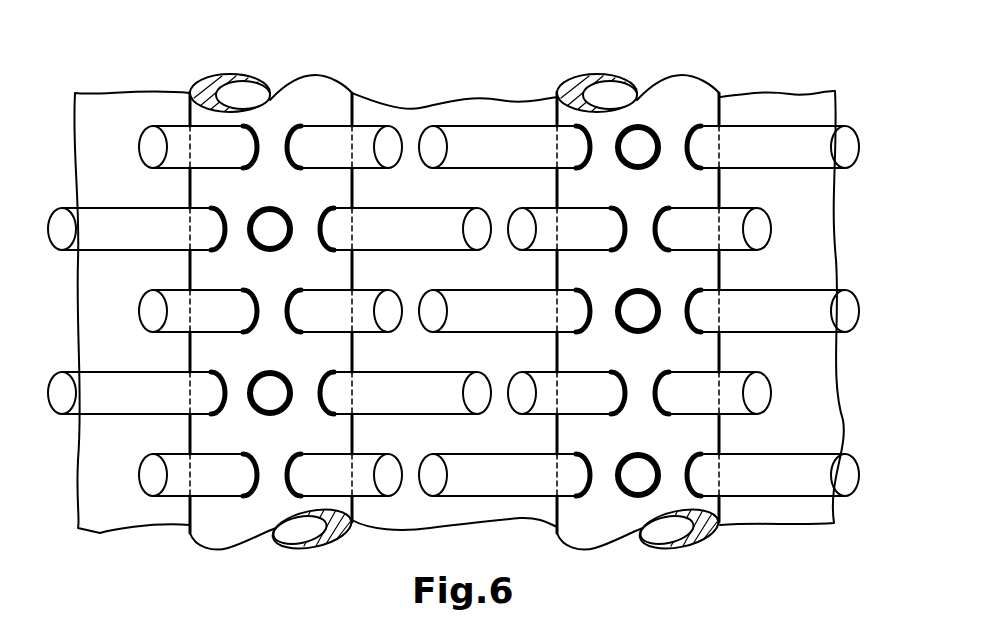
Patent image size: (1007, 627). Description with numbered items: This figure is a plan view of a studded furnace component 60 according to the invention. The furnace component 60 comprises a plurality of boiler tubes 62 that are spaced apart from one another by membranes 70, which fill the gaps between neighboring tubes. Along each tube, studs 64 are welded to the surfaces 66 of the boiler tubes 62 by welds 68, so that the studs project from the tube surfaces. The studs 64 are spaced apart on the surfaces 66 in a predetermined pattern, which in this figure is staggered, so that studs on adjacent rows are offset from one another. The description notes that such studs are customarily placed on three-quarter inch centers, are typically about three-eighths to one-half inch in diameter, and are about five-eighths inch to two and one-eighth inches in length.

The furnace component 60 is at (473, 310).
The boiler tube 62 is at (333, 540).
The stud 64 is at (182, 140).
The surface 66 is at (210, 190).
The weld 68 is at (257, 156).
The membrane 70 is at (815, 100).